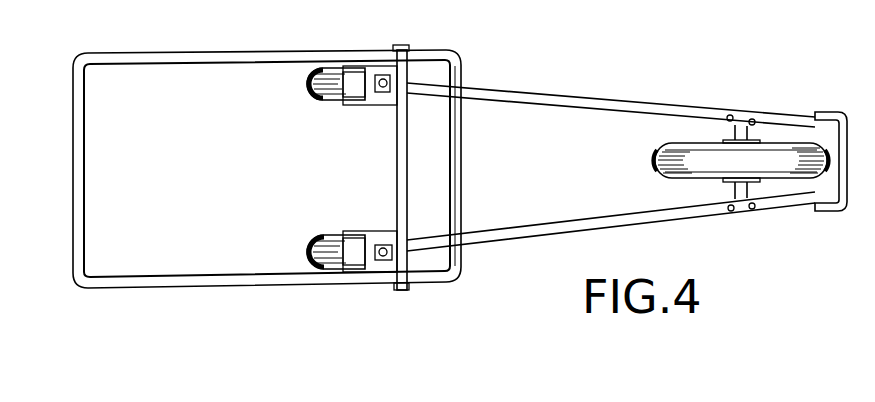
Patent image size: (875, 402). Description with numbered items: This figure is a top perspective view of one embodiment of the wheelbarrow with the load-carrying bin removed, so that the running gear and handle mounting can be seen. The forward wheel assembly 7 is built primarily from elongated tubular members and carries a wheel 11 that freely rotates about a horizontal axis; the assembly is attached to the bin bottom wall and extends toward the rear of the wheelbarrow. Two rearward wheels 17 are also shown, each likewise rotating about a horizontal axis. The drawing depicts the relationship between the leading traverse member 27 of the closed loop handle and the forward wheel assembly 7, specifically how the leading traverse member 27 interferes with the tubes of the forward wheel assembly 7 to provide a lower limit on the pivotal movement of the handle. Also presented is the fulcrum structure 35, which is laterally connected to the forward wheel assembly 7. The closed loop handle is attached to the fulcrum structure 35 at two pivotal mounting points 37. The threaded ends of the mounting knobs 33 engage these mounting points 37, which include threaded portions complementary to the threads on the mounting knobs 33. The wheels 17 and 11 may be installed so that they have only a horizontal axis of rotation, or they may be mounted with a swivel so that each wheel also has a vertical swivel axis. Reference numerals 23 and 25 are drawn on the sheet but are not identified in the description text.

The forward wheel assembly 7 is at (722, 117).
The wheel 11 is at (658, 156).
The wheel 17 is at (306, 90).
The platform bed 23 is at (85, 175).
The frame tube 25 is at (192, 51).
The leading traverse member 27 is at (462, 170).
The mounting knobs 33 is at (665, 0).
The fulcrum structure 35 is at (400, 158).
The pivotal mounting points 37 is at (409, 46).